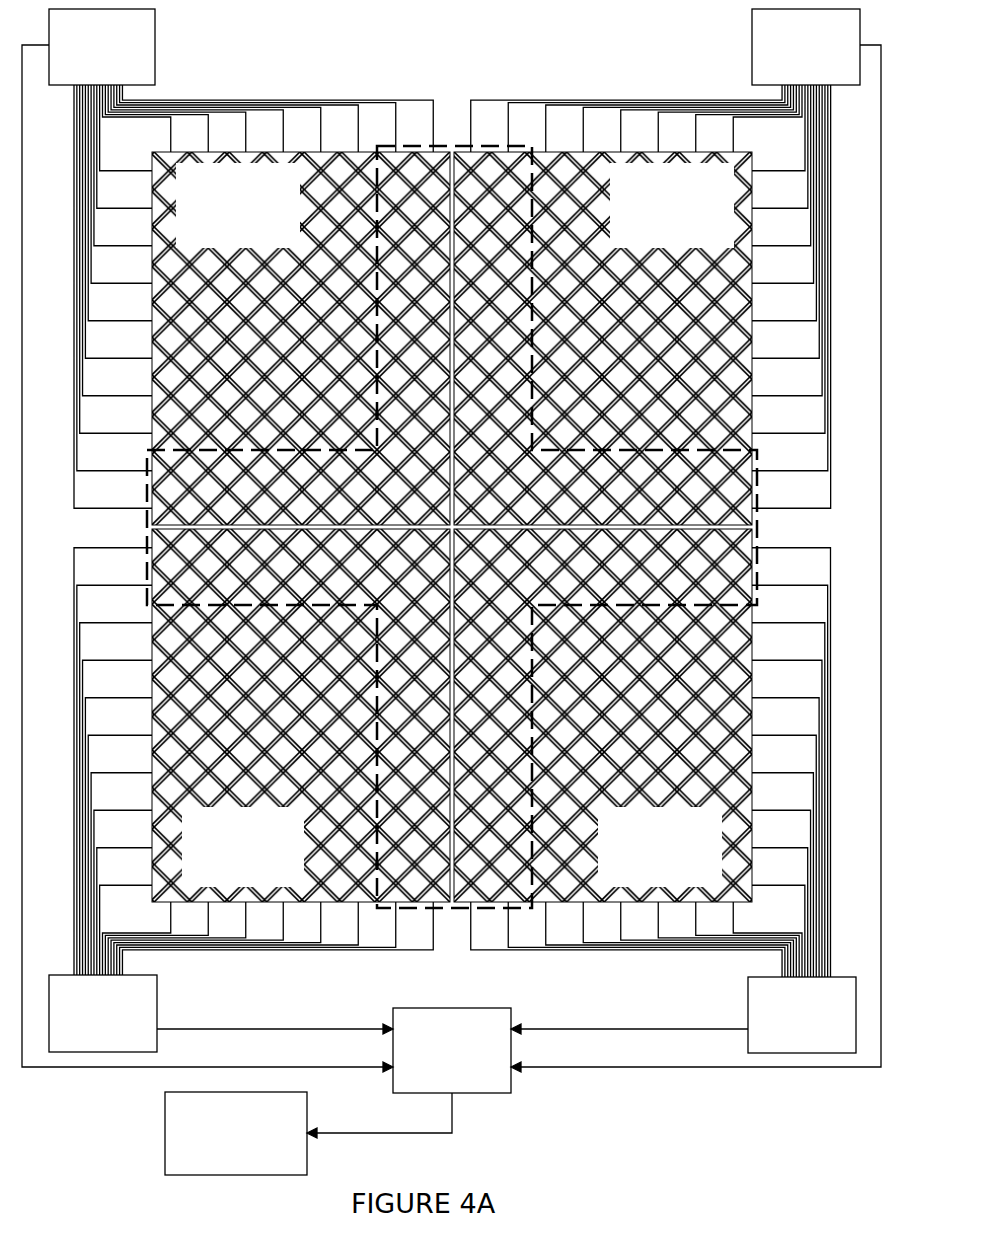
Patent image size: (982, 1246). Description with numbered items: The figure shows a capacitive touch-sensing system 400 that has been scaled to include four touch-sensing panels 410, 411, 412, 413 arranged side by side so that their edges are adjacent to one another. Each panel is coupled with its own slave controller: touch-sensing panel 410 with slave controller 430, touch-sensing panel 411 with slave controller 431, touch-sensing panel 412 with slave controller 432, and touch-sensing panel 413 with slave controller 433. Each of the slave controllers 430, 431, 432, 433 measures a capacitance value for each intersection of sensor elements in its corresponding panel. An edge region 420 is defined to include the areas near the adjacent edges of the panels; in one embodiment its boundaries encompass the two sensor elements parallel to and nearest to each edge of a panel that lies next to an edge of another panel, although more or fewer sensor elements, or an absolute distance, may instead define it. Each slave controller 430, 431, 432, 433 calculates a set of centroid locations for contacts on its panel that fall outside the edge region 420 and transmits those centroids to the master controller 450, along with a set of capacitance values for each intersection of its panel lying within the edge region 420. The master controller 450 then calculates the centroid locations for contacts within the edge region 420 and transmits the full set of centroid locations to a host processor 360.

The capacitive touch-sensing system 400 is at (457, 610).
The touch-sensing panel 410 is at (301, 715).
The touch-sensing panel 411 is at (603, 715).
The touch-sensing panel 412 is at (603, 338).
The touch-sensing panel 413 is at (301, 338).
The edge region 420 is at (770, 523).
The slave controller 430 is at (88, 1045).
The slave controller 431 is at (787, 1047).
The slave controller 432 is at (791, 77).
The slave controller 433 is at (87, 77).
The master controller 450 is at (437, 1082).
The host processor 360 is at (221, 1169).